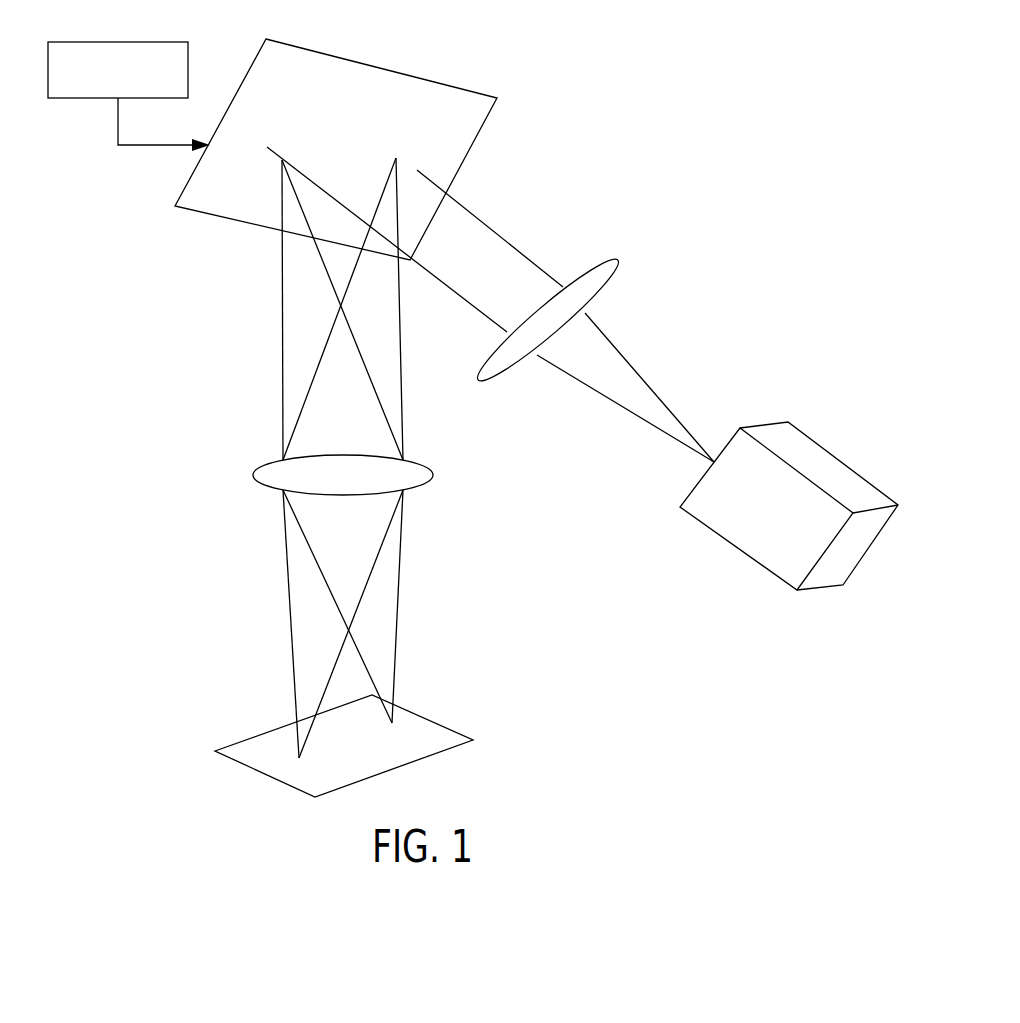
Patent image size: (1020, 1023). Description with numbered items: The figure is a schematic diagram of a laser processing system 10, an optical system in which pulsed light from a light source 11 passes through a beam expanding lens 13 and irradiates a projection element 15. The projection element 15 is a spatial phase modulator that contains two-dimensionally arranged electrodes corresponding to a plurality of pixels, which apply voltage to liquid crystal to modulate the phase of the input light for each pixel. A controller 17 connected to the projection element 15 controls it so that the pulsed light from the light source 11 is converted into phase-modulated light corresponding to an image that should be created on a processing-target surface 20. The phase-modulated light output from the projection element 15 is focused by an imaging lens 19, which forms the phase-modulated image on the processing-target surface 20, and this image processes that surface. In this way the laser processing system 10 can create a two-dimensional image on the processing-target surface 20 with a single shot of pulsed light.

The laser processing system 10 is at (768, 127).
The light source 11 is at (816, 445).
The beam expanding lens 13 is at (620, 262).
The projection element 15 is at (478, 93).
The controller 17 is at (166, 42).
The imaging lens 19 is at (254, 475).
The processing-target surface 20 is at (470, 742).